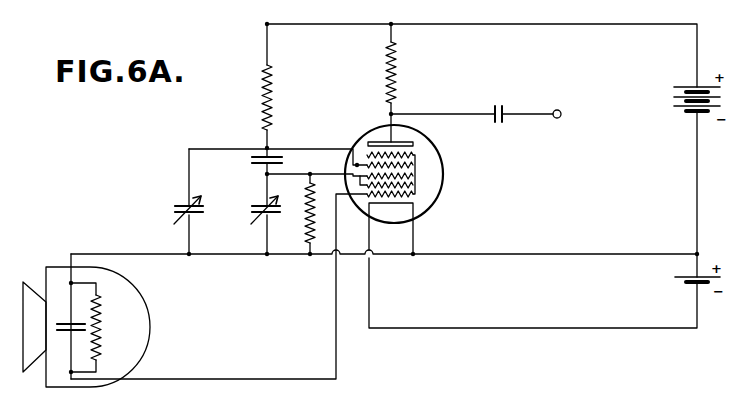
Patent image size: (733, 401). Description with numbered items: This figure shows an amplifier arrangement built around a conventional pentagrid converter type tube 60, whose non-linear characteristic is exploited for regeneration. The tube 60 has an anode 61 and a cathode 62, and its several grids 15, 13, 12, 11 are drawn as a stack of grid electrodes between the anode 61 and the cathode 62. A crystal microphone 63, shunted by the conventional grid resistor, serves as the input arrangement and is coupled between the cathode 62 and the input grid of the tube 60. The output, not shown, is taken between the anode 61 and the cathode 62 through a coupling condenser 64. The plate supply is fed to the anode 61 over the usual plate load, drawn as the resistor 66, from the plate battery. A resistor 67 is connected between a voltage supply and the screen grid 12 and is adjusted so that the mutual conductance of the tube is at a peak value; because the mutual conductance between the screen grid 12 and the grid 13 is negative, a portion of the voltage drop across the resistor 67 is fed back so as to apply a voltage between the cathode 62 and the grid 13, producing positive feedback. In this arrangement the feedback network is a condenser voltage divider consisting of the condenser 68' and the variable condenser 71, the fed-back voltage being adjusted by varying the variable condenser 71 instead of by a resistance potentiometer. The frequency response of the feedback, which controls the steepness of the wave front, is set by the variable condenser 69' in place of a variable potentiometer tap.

The tube 60 is at (441, 181).
The anode 61 is at (410, 142).
The cathode 62 is at (393, 206).
The microphone 63 is at (54, 276).
The coupling condenser 64 is at (505, 120).
The plate load resistor 66 is at (396, 73).
The resistor 67 is at (273, 99).
The condenser 68' is at (243, 174).
The variable condenser 69' is at (168, 204).
The variable condenser 71 is at (273, 212).
The grid 15 is at (398, 171).
The grid 13 is at (398, 176).
The screen grid 12 is at (398, 186).
The grid 11 is at (398, 196).